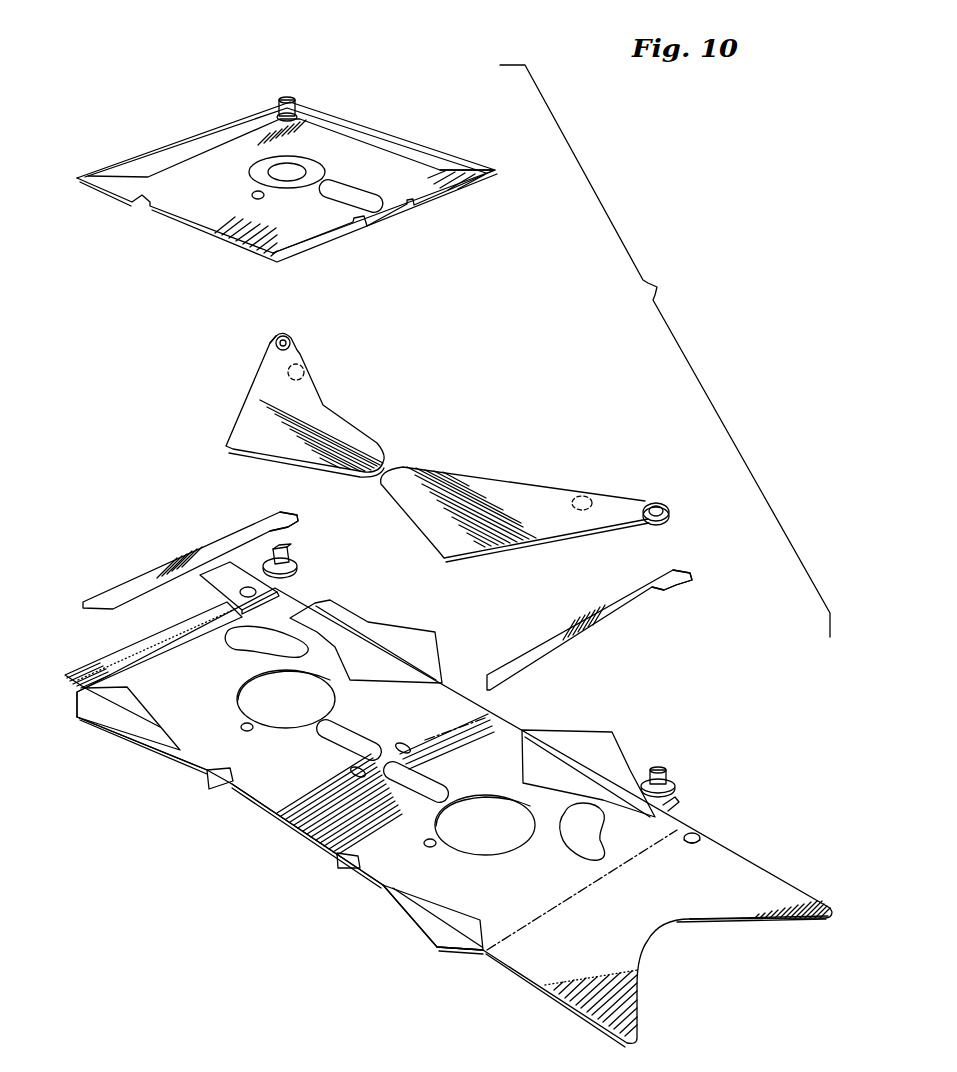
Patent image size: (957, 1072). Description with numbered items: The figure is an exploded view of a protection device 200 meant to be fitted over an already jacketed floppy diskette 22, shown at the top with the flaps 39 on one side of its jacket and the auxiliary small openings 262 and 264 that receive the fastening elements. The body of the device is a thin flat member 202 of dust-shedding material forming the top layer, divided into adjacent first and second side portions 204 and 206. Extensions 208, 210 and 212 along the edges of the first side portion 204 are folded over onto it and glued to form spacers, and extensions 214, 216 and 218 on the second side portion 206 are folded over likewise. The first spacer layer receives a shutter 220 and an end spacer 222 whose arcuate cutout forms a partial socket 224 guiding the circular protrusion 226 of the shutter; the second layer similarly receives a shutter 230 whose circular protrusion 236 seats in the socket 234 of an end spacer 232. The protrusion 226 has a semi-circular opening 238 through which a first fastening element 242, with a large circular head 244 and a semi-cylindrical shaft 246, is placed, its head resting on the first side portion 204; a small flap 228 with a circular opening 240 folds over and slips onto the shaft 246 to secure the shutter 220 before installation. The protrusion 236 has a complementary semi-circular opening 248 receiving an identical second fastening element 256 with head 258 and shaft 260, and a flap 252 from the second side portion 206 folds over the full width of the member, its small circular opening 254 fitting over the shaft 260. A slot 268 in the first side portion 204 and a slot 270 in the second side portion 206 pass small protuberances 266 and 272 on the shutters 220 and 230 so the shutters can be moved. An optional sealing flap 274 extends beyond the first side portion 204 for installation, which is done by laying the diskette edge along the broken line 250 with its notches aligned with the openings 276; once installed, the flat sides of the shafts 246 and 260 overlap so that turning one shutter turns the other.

The floppy diskette 22 is at (375, 125).
The flaps 39 is at (437, 158).
The auxiliary small opening 262 is at (283, 104).
The small opening 264 is at (294, 113).
The shutter 220 is at (255, 396).
The circular protrusion 226 is at (268, 343).
The semi-circular opening 238 is at (293, 338).
The small protuberance 266 is at (303, 368).
The shutter 230 is at (493, 490).
The small protuberance 272 is at (582, 497).
The circular protrusion 236 is at (668, 510).
The complementary semi-circular opening 248 is at (655, 505).
The end spacer 222 is at (157, 550).
The partial socket 224 is at (285, 518).
The small flap 228 is at (225, 578).
The circular opening 240 is at (257, 592).
The first fastening element 242 is at (307, 548).
The large circular head 244 is at (296, 569).
The semi-cylindrical shaft 246 is at (290, 548).
The end spacer 232 is at (607, 617).
The socket 234 is at (670, 574).
The protection device 200 is at (448, 817).
The thin flat member 202 is at (265, 810).
The first side portion 204 is at (193, 757).
The second side portion 206 is at (378, 889).
The extension 208 is at (400, 622).
The extension 210 is at (105, 727).
The extension 212 is at (210, 792).
The extension 214 is at (572, 730).
The extension 216 is at (425, 942).
The extension 218 is at (332, 866).
The broken line 250 is at (453, 720).
The flap 252 is at (757, 875).
The small circular opening 254 is at (700, 837).
The second fastening element 256 is at (683, 753).
The head 258 is at (682, 784).
The shaft 260 is at (652, 767).
The slot 268 is at (232, 637).
The slot 270 is at (580, 851).
The sealing flap 274 is at (140, 638).
The openings 276 is at (349, 771).